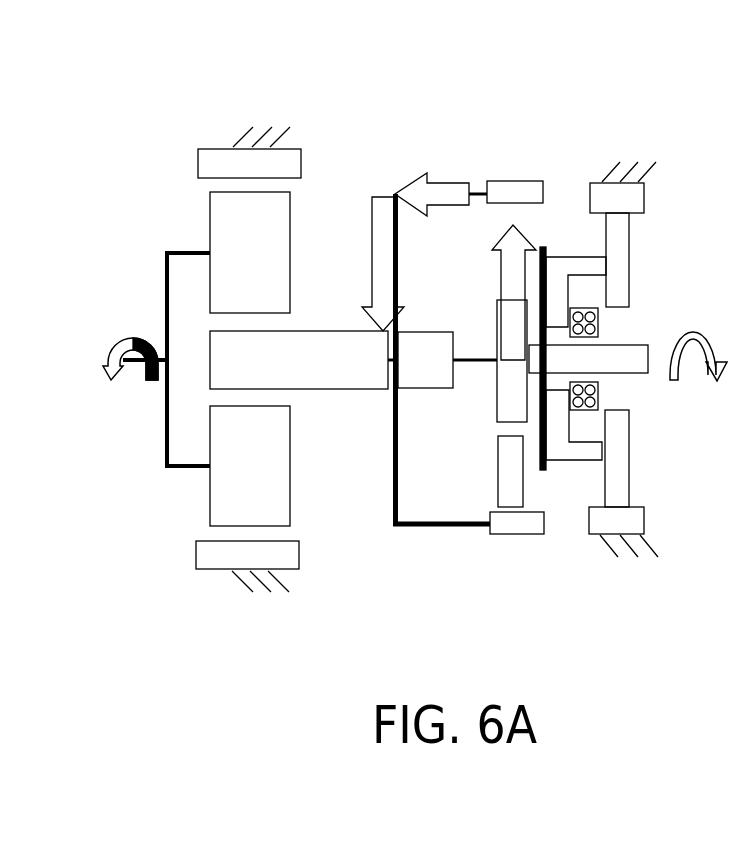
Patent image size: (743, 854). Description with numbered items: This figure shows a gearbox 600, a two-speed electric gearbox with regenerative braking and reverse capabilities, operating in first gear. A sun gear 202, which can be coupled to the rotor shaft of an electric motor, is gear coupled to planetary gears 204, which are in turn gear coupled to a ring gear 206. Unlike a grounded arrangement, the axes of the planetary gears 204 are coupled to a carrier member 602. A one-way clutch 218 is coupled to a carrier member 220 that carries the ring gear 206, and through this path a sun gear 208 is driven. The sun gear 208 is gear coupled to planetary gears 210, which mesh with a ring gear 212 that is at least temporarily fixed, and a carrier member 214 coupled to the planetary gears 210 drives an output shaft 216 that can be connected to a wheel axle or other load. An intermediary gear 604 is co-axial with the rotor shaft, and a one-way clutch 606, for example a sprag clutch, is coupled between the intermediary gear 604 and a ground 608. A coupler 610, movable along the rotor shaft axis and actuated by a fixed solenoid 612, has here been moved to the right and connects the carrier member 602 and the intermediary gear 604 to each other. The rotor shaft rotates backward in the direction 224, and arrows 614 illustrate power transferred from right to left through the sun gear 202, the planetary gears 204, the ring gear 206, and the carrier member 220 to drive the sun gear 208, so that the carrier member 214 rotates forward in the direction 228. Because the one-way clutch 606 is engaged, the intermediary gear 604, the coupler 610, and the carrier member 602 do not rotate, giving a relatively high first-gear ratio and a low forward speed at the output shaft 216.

The gearbox 600 is at (661, 102).
The carrier member 602 is at (540, 285).
The intermediary gear 604 is at (630, 270).
The one-way clutch 606 is at (599, 208).
The ground 608 is at (656, 164).
The coupler 610 is at (549, 257).
The solenoid 612 is at (599, 320).
The arrows 614 is at (371, 238).
The sun gear 202 is at (497, 322).
The planetary gears 204 is at (523, 226).
The ring gear 206 is at (520, 181).
The sun gear 208 is at (281, 370).
The planetary gears 210 is at (232, 263).
The ring gear 212 is at (231, 174).
The carrier member 214 is at (173, 252).
The output shaft 216 is at (136, 366).
The one-way clutch 218 is at (407, 370).
The carrier member 220 is at (395, 450).
The direction 224 is at (684, 336).
The direction 228 is at (129, 336).